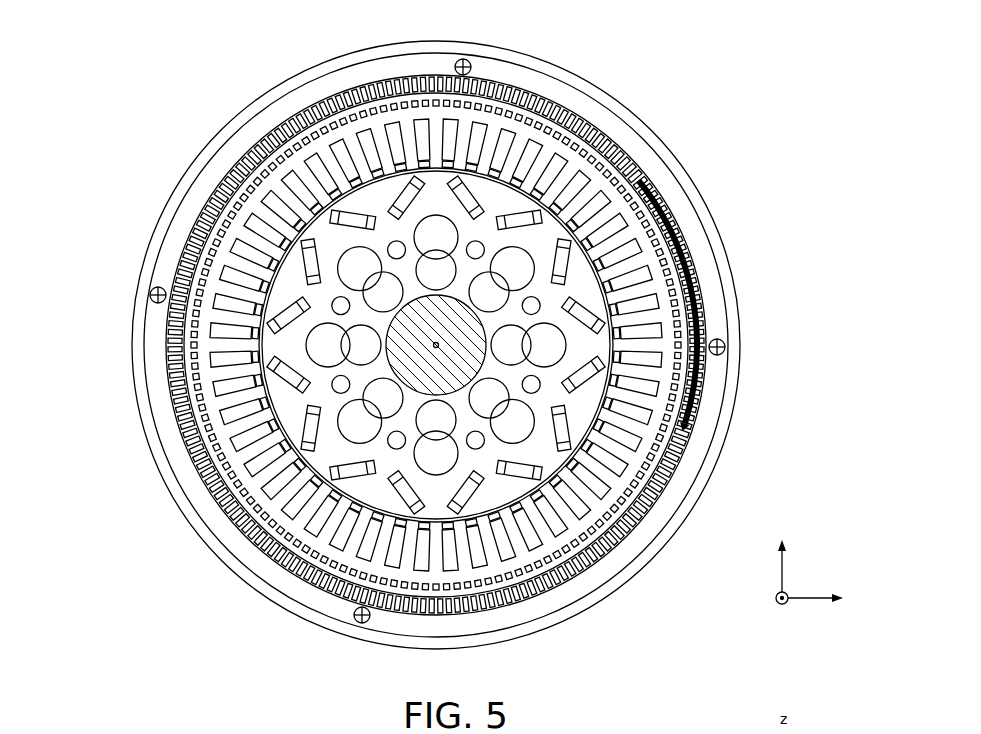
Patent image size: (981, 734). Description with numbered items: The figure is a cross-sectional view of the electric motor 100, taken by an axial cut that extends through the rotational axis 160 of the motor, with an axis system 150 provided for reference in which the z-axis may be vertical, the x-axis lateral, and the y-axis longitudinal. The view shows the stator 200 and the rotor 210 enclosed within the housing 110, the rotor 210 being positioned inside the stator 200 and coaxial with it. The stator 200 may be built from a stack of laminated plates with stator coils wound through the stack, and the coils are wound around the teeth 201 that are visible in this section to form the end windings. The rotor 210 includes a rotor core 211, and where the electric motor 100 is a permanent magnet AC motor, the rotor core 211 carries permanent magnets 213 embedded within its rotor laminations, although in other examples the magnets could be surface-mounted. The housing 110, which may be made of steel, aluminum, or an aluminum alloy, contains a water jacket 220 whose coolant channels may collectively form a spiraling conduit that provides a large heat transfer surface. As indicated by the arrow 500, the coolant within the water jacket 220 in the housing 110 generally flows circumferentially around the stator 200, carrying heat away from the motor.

The electric motor 100 is at (776, 80).
The housing 110 is at (688, 142).
The axis system 150 is at (831, 569).
The rotational axis 160 is at (440, 349).
The stator 200 is at (253, 203).
The teeth 201 is at (250, 260).
The rotor 210 is at (327, 462).
The rotor core 211 is at (283, 343).
The permanent magnets 213 is at (255, 372).
The water jacket 220 is at (708, 280).
The arrow 500 is at (698, 345).